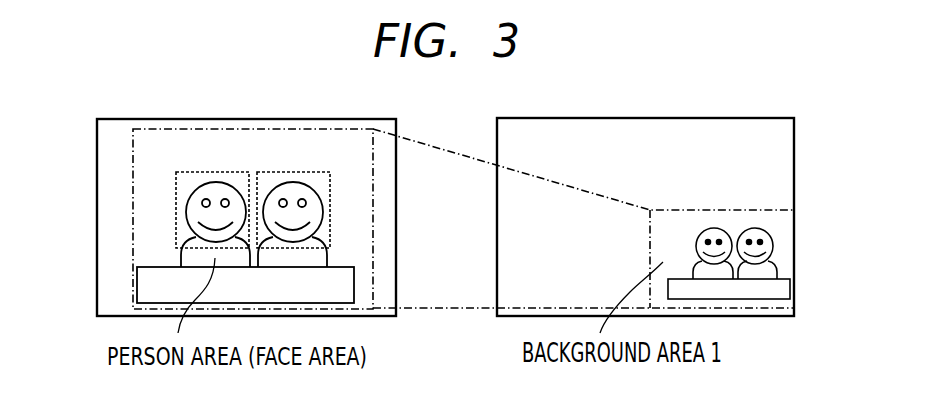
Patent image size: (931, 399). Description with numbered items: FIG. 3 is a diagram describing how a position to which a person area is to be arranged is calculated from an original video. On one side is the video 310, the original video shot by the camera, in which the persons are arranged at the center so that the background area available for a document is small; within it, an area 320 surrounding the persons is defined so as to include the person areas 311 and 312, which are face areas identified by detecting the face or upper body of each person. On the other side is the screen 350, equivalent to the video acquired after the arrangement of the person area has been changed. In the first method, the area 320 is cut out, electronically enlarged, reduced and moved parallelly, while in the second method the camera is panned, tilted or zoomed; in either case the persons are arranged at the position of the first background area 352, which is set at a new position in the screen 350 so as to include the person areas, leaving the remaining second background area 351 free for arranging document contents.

The video 310 is at (282, 118).
The area surrounding the persons 320 is at (182, 128).
The person area 311 is at (182, 207).
The person area 312 is at (327, 203).
The screen 350 is at (595, 117).
The background area 2 351 is at (712, 130).
The background area 1 352 is at (648, 243).